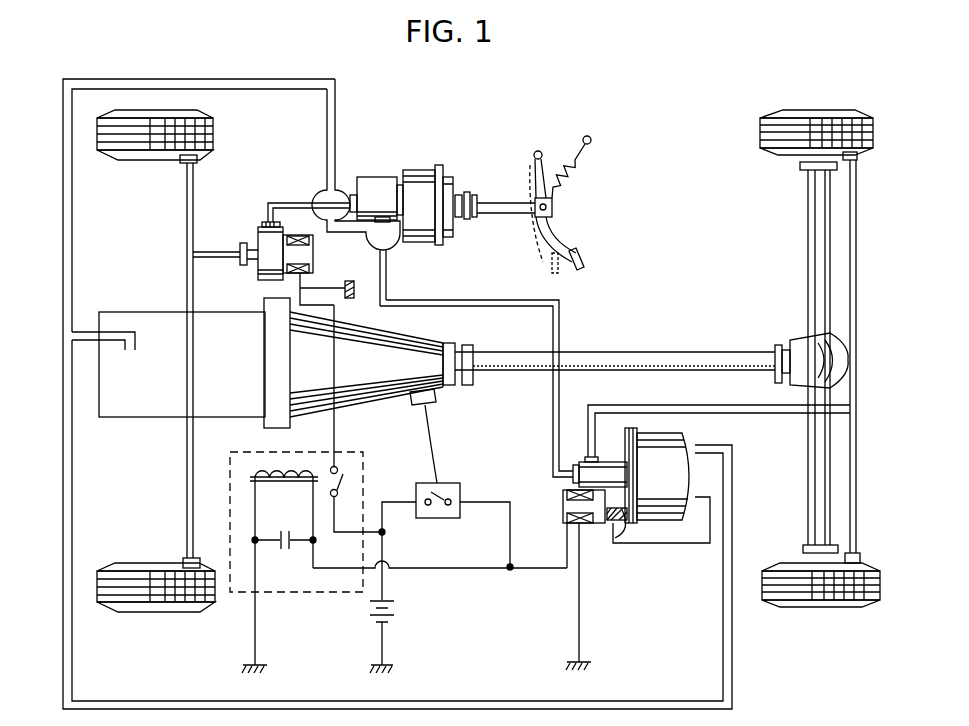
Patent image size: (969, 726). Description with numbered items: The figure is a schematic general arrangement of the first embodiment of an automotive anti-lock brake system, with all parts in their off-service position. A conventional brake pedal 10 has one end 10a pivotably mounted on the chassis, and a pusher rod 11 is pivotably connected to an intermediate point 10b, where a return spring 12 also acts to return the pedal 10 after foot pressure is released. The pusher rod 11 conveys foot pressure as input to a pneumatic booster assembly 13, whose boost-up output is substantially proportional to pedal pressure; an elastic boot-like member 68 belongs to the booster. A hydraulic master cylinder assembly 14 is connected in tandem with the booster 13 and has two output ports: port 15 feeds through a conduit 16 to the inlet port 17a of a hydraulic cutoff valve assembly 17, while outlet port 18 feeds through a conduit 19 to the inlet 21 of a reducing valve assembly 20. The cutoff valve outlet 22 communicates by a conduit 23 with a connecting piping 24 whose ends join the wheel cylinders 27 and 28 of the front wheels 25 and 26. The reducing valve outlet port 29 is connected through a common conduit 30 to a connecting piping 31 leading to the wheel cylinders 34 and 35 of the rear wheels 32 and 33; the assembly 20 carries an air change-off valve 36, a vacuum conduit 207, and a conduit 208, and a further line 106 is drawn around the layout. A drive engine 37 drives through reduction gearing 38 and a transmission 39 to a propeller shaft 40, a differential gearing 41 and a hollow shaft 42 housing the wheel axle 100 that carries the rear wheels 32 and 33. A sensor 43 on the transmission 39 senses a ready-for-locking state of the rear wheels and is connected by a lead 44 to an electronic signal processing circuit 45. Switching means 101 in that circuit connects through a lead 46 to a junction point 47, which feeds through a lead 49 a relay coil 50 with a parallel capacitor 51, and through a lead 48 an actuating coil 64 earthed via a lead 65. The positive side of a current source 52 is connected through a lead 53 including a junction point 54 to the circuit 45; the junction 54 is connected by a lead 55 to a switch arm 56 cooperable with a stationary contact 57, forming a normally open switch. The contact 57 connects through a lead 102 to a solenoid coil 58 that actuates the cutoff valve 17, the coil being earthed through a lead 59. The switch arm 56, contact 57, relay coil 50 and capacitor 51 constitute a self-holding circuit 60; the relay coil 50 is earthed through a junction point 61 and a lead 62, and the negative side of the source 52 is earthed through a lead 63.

The brake pedal 10 is at (583, 262).
The pedal end 10a is at (591, 140).
The intermediate pivotable connection 10b is at (552, 207).
The pusher rod 11 is at (504, 203).
The return spring 12 is at (578, 170).
The pneumatic booster assembly 13 is at (427, 170).
The hydraulic master cylinder assembly 14 is at (378, 176).
The output port 15 is at (352, 196).
The conduit 16 is at (297, 203).
The hydraulic cutoff valve assembly 17 is at (258, 228).
The inlet port 17a is at (280, 226).
The outlet port 18 is at (387, 252).
The conduit 19 is at (505, 300).
The reducing valve assembly 20 is at (692, 441).
The inlet 21 is at (600, 470).
The outlet 22 is at (251, 266).
The conduit 23 is at (222, 252).
The connecting piping 24 is at (187, 226).
The front wheel 25 is at (209, 126).
The front wheel 26 is at (178, 600).
The wheel cylinder 27 is at (207, 159).
The wheel cylinder 28 is at (183, 560).
The outlet port 29 is at (586, 459).
The common conduit 30 is at (786, 413).
The connecting piping 31 is at (856, 314).
The rear wheel 32 is at (760, 132).
The rear wheel 33 is at (776, 590).
The wheel cylinder 34 is at (857, 158).
The wheel cylinder 35 is at (857, 556).
The air change-off valve 36 is at (618, 540).
The automotive drive engine 37 is at (126, 312).
The reduction gearing 38 is at (264, 356).
The transmission 39 is at (365, 364).
The propeller shaft 40 is at (684, 352).
The differential gearing 41 is at (840, 366).
The hollow shaft 42 is at (808, 271).
The sensor 43 is at (411, 398).
The lead 44 is at (436, 440).
The electronic signal processing circuit 45 is at (448, 512).
The lead 46 is at (512, 548).
The junction point 47 is at (511, 570).
The lead 48 is at (566, 570).
The lead 49 is at (468, 570).
The relay coil 50 is at (302, 470).
The capacitor 51 is at (280, 530).
The current source 52 is at (395, 616).
The lead 53 is at (384, 582).
The junction point 54 is at (386, 534).
The lead 55 is at (355, 536).
The switch arm 56 is at (350, 493).
The stationary contact 57 is at (349, 468).
The solenoid coil 58 is at (313, 247).
The lead 59 is at (334, 305).
The self-holding circuit 60 is at (349, 597).
The junction point 61 is at (257, 544).
The lead 62 is at (257, 634).
The lead 63 is at (390, 661).
The actuating coil 64 is at (585, 515).
The lead 65 is at (580, 622).
The boot-like member 68 is at (466, 220).
The wheel axle 100 is at (800, 166).
The switching means 101 is at (460, 492).
The lead 102 is at (330, 368).
The fluid line 106 is at (225, 79).
The conduit 207 is at (213, 701).
The conduit 208 is at (709, 545).